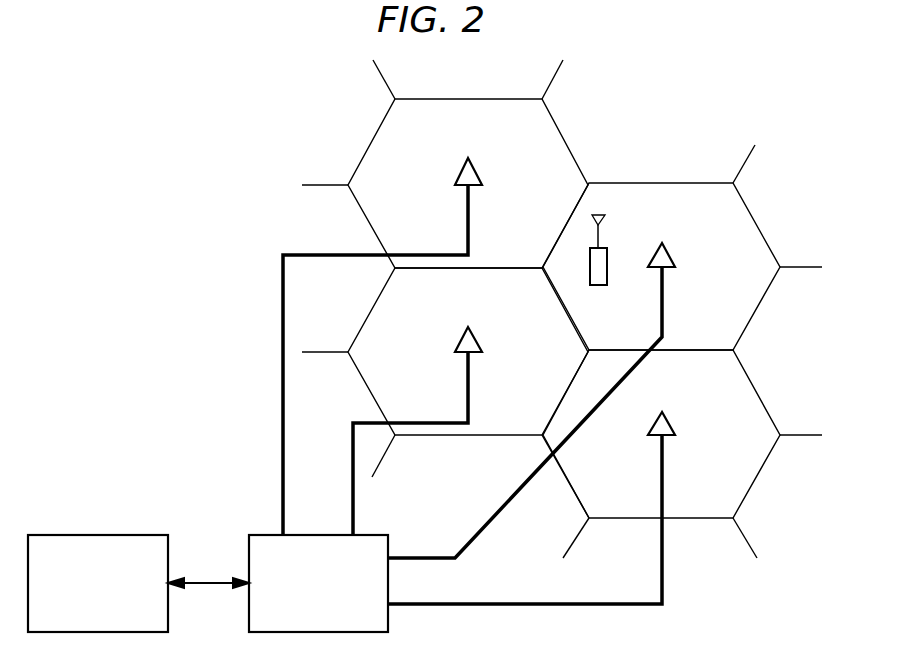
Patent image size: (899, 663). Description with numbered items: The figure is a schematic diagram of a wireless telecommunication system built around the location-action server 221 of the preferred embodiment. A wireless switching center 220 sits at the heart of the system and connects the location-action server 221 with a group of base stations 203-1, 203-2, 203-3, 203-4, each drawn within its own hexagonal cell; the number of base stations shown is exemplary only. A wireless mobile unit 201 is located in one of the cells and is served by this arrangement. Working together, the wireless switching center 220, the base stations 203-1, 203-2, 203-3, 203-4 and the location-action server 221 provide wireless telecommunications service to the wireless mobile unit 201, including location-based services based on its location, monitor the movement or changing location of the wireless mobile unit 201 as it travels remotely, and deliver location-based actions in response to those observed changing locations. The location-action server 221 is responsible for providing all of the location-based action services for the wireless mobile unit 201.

The wireless mobile unit 201 is at (598, 288).
The base station 203-1 is at (471, 207).
The base station 203-2 is at (471, 374).
The base station 203-3 is at (665, 290).
The base station 203-4 is at (665, 458).
The wireless switching center 220 is at (318, 535).
The location-action server 221 is at (98, 535).